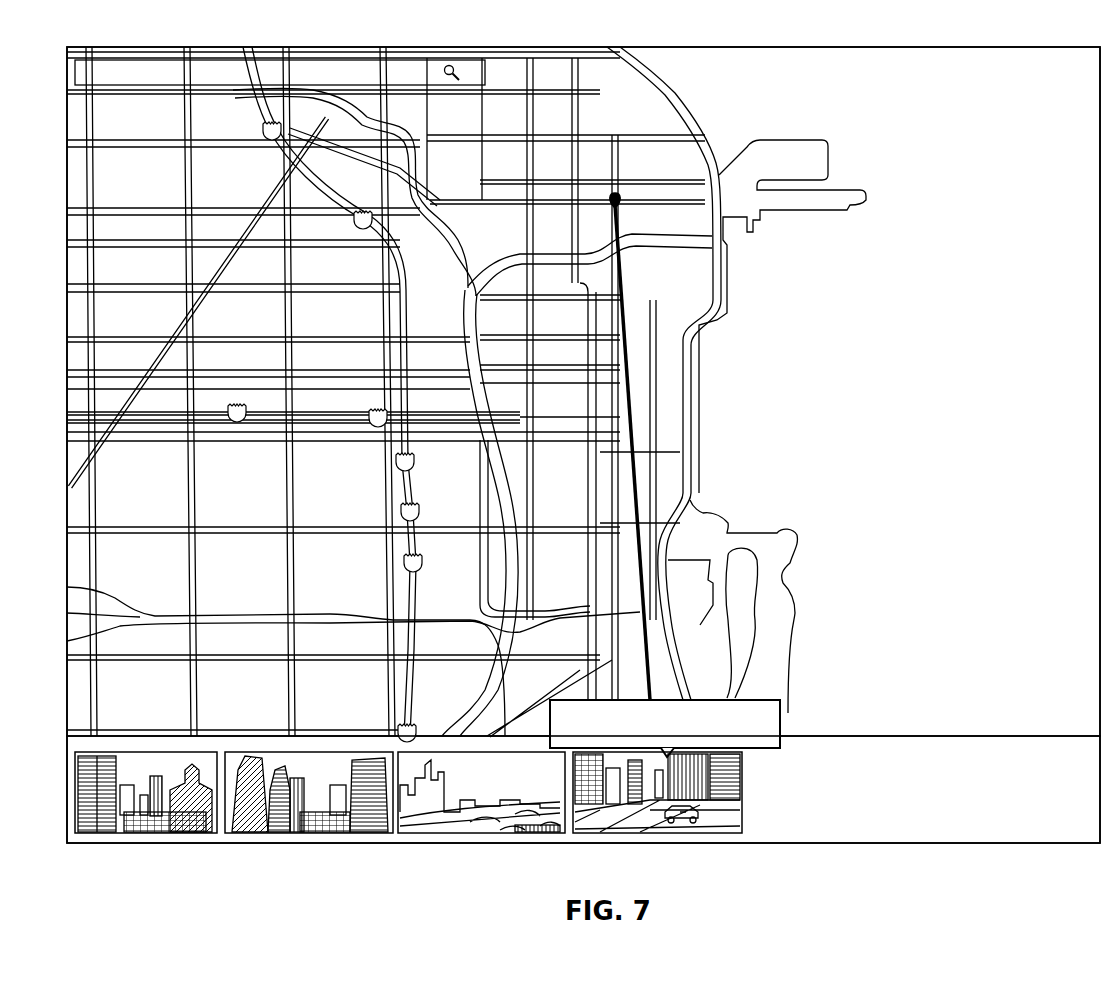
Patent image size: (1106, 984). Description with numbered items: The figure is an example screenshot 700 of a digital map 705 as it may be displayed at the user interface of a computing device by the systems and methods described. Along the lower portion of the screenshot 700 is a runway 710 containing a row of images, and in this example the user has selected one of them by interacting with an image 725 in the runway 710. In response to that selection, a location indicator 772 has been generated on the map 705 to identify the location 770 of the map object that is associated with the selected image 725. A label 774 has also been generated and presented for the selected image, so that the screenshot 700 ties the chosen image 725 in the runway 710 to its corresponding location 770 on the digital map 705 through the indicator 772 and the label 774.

The screenshot 700 is at (731, 19).
The digital map 705 is at (830, 47).
The runway 710 is at (67, 800).
The image 725 is at (140, 833).
The location 770 is at (620, 207).
The location indicator 772 is at (636, 477).
The label 774 is at (723, 700).